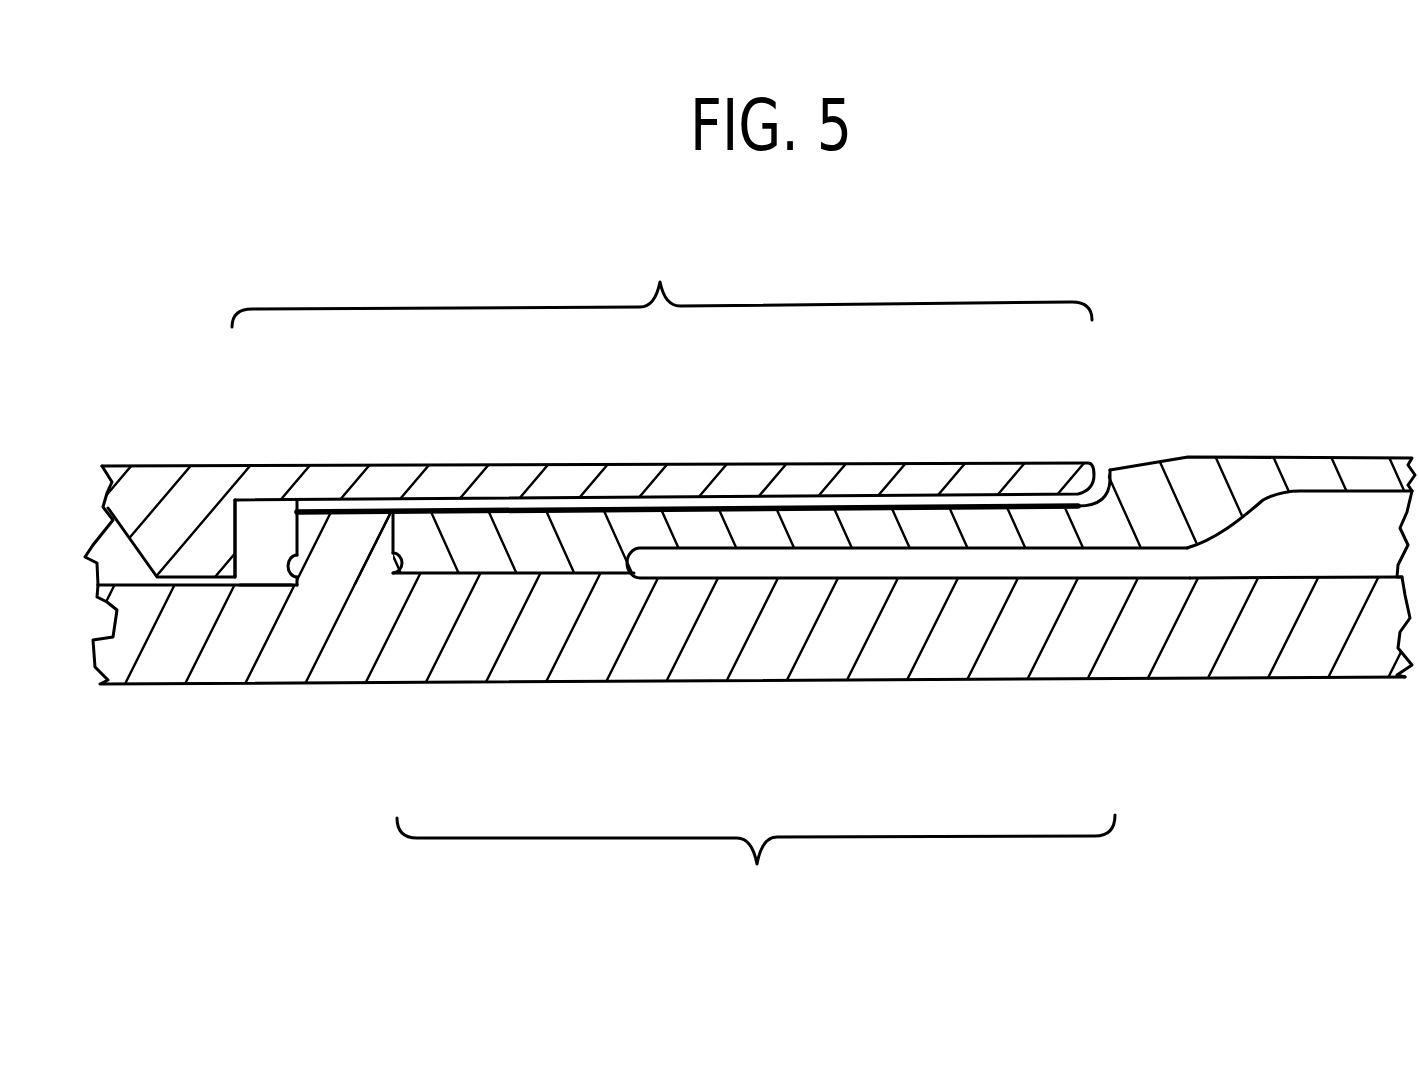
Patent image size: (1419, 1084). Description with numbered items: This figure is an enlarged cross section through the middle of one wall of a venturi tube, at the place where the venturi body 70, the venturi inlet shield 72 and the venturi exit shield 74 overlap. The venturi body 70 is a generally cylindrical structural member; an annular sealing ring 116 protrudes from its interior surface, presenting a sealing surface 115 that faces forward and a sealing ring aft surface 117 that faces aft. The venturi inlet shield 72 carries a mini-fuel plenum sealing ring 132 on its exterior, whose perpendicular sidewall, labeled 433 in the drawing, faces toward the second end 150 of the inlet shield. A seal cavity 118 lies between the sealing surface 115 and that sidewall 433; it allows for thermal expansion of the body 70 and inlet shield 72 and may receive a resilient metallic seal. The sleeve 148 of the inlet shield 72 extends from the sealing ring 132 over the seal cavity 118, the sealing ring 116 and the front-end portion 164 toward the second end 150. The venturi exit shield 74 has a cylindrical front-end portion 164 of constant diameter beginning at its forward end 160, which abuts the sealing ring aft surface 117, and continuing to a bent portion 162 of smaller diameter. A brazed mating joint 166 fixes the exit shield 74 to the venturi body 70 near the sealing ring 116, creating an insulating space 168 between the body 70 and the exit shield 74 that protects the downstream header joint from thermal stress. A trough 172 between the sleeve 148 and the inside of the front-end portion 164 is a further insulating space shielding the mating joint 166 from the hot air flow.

The venturi body 70 is at (1238, 637).
The venturi inlet shield 72 is at (577, 482).
The venturi exit shield 74 is at (1283, 478).
The sealing surface 115 is at (297, 560).
The sealing ring 116 is at (348, 557).
The sealing ring aft surface 117 is at (381, 567).
The seal cavity 118 is at (265, 550).
The mini-fuel plenum sealing ring 132 is at (182, 532).
The sleeve 148 is at (662, 281).
The second end 150 is at (1095, 464).
The forward end 160 is at (426, 506).
The bent portion 162 is at (1185, 505).
The front-end portion 164 is at (756, 865).
The mating joint 166 is at (505, 577).
The insulating space 168 is at (1342, 525).
The trough 172 is at (817, 503).
The side wall 433 is at (240, 531).